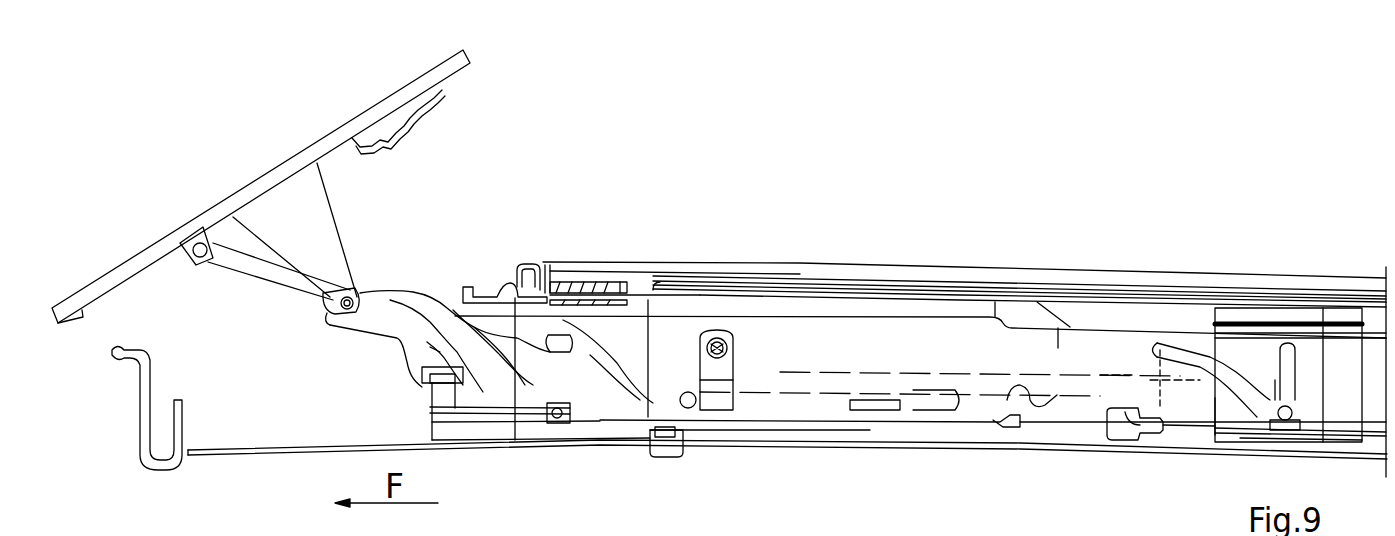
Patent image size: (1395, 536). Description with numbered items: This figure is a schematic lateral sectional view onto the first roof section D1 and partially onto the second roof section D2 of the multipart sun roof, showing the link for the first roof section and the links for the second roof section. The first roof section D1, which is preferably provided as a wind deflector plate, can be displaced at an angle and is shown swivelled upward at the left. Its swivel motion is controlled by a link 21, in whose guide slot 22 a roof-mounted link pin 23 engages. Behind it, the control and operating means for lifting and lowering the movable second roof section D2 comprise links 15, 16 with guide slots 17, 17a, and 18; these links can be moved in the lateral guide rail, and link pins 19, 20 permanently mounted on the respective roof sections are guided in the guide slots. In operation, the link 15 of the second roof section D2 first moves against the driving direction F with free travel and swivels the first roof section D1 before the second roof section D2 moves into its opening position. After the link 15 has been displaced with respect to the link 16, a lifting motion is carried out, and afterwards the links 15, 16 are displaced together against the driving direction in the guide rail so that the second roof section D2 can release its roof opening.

The first roof section D1 is at (290, 163).
The second roof section D2 is at (945, 274).
The link 15 is at (537, 350).
The link 16 is at (1230, 355).
The guide slot 17 is at (620, 365).
The guide slot 17a is at (1165, 380).
The guide slot 18 is at (1280, 362).
The link pin 19 is at (688, 408).
The link pin 20 is at (1298, 410).
The link 21 is at (362, 318).
The guide slot 22 is at (440, 352).
The link pin 23 is at (350, 300).